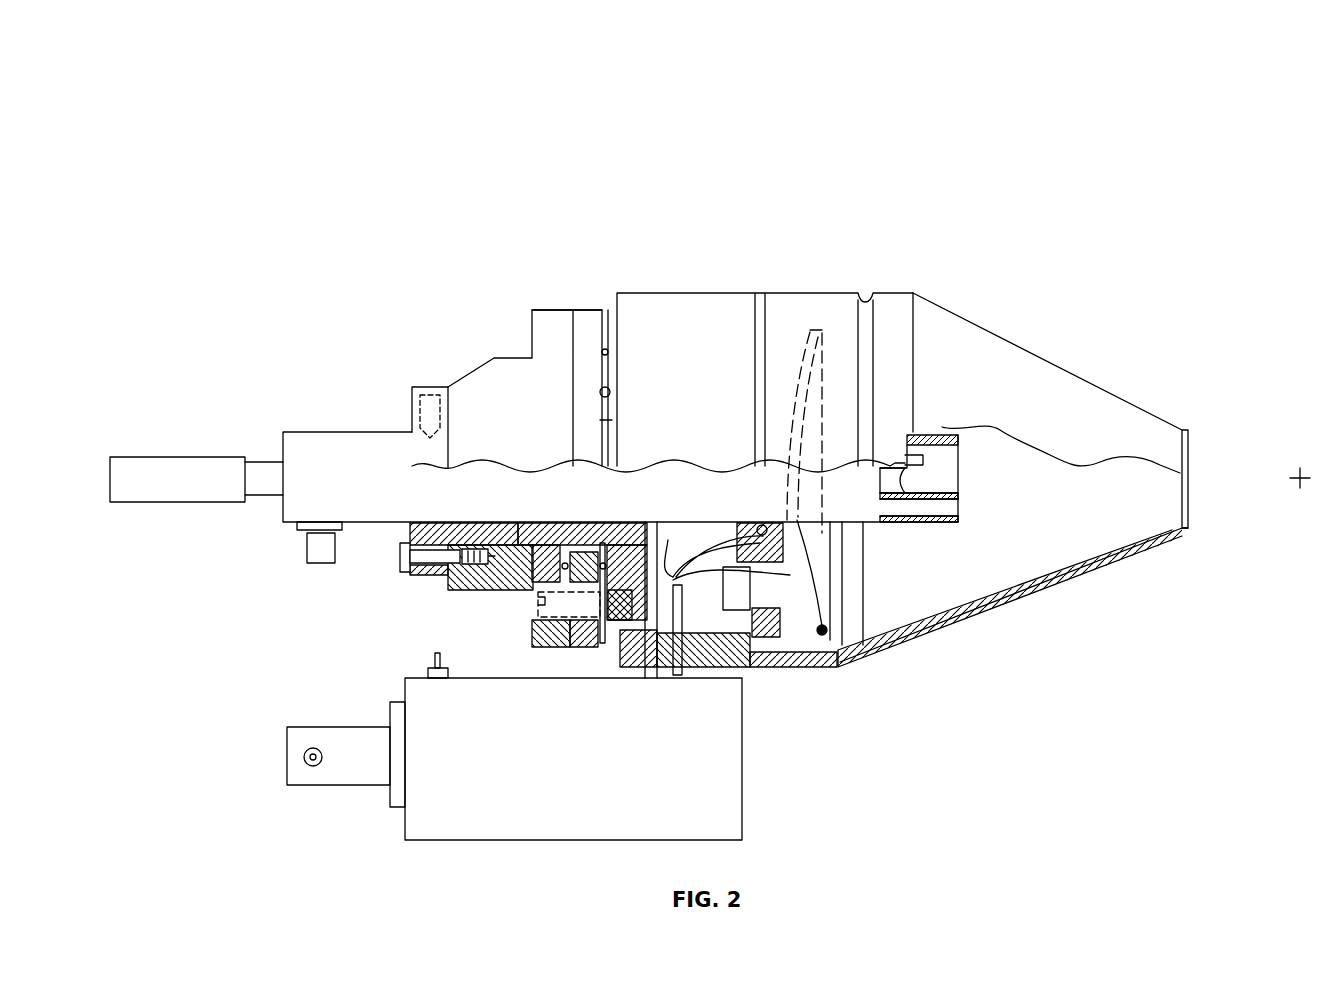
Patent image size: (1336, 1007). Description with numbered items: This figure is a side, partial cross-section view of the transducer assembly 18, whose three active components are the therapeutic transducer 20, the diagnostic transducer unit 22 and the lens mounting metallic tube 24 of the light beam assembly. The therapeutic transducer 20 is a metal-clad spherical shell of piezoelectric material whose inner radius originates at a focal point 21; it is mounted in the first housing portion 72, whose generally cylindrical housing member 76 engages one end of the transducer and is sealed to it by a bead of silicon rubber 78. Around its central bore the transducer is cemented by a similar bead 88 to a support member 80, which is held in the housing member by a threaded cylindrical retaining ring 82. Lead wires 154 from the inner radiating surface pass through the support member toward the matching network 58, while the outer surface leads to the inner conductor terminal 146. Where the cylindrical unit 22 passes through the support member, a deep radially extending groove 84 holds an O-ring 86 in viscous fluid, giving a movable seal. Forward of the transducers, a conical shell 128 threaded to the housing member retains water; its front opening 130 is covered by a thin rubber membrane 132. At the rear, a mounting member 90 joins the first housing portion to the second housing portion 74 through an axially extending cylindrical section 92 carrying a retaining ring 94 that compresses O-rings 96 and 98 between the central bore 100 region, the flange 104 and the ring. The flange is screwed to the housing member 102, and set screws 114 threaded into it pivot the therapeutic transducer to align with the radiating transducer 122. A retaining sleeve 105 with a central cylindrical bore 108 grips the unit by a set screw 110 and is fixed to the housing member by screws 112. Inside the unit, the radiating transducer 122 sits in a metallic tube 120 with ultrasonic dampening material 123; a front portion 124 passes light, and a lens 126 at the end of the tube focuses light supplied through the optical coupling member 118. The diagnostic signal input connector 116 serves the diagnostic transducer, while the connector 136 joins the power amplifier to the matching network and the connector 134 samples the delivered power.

The transducer assembly 18 is at (980, 798).
The therapeutic transducer 20 is at (816, 333).
The focal point 21 is at (1303, 472).
The diagnostic transducer unit 22 is at (337, 430).
The lens mounting metallic tube 24 is at (258, 460).
The matching network 58 is at (742, 785).
The first housing portion 72 is at (713, 214).
The second housing portion 74 is at (504, 344).
The housing member 76 is at (677, 292).
The bead of silicon rubber 78 is at (776, 600).
The support member 80 is at (778, 667).
The cylindrical retaining ring 82 is at (745, 667).
The radially extending groove 84 is at (826, 636).
The O-ring 86 is at (763, 525).
The bead of silicon rubber cement 88 is at (905, 660).
The mounting member 90 is at (625, 632).
The axially extending cylindrical section 92 is at (540, 562).
The retaining ring 94 is at (578, 568).
The O-ring 96 is at (603, 572).
The O-ring 98 is at (560, 630).
The central bore 100 is at (580, 527).
The housing member 102 is at (450, 582).
The flange 104 is at (583, 308).
The retaining sleeve 105 is at (412, 570).
The central cylindrical bore 108 is at (412, 526).
The set screw 110 is at (430, 387).
The screw 112 is at (400, 555).
The set screw 114 is at (598, 602).
The diagnostic signal input connector 116 is at (305, 547).
The optical coupling member 118 is at (148, 455).
The metallic tube 120 is at (938, 522).
The radiating transducer 122 is at (960, 503).
The ultrasonic dampening material 123 is at (945, 520).
The front portion 124 is at (937, 437).
The lens 126 is at (915, 522).
The conical shell 128 is at (1130, 402).
The front opening 130 is at (1190, 505).
The membrane 132 is at (1190, 430).
The connector 134 is at (428, 672).
The connector 136 is at (300, 727).
The inner conductor terminal 146 is at (668, 538).
The lead wires 154 is at (808, 667).